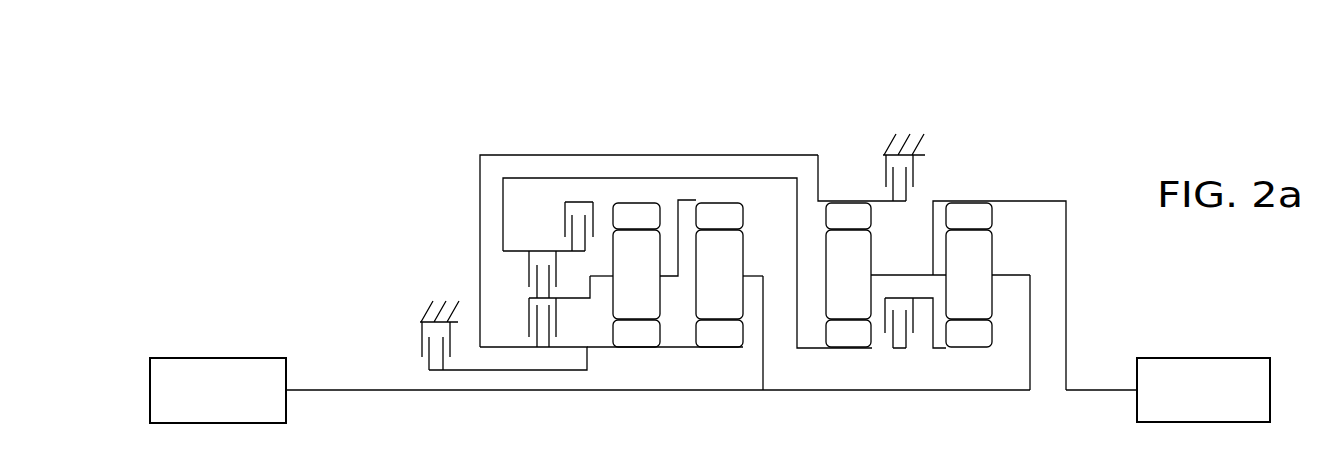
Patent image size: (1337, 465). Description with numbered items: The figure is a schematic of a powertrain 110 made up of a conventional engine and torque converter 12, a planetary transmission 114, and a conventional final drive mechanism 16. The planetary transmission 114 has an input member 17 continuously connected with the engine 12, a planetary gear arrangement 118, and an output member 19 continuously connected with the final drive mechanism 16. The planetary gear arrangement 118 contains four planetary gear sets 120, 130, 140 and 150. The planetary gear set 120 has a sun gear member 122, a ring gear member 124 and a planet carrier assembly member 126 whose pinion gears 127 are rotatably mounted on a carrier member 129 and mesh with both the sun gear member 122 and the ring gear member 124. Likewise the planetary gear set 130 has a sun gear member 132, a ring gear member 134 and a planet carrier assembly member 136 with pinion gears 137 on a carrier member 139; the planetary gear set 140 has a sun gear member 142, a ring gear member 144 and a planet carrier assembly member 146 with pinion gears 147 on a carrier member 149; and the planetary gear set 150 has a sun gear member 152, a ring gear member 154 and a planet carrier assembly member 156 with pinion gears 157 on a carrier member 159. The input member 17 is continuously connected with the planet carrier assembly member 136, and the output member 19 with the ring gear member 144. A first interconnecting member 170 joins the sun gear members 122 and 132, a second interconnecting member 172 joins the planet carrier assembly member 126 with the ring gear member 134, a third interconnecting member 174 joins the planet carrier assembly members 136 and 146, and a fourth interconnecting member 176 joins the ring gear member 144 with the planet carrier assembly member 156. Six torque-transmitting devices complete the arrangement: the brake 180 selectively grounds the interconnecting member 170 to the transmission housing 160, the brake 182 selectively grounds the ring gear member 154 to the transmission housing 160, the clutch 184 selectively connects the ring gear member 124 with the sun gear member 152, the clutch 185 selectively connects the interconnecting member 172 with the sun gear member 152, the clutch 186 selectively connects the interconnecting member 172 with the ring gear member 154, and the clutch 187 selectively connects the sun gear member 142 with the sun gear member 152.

The engine and torque converter 12 is at (207, 340).
The final drive mechanism 16 is at (1218, 345).
The input member 17 is at (320, 393).
The output member 19 is at (1095, 392).
The powertrain 110 is at (638, 88).
The planetary transmission 114 is at (727, 88).
The planetary gear arrangement 118 is at (818, 88).
The planetary gear set 120 is at (634, 327).
The sun gear member 122 is at (636, 333).
The ring gear member 124 is at (623, 225).
The planet carrier assembly member 126 is at (605, 285).
The pinion gears 127 is at (623, 283).
The carrier member 129 is at (602, 276).
The planetary gear set 130 is at (717, 327).
The sun gear member 132 is at (719, 333).
The ring gear member 134 is at (706, 225).
The planet carrier assembly member 136 is at (748, 262).
The pinion gears 137 is at (706, 283).
The carrier member 139 is at (750, 276).
The planetary gear set 140 is at (967, 327).
The sun gear member 142 is at (969, 333).
The ring gear member 144 is at (955, 225).
The planet carrier assembly member 146 is at (1004, 262).
The pinion gears 147 is at (955, 283).
The carrier member 149 is at (1010, 275).
The planetary gear set 150 is at (846, 327).
The sun gear member 152 is at (848, 333).
The ring gear member 154 is at (835, 225).
The planet carrier assembly member 156 is at (879, 262).
The pinion gears 157 is at (835, 283).
The carrier member 159 is at (885, 275).
The transmission housing 160 is at (432, 305).
The first interconnecting member 170 is at (683, 348).
The second interconnecting member 172 is at (672, 215).
The third interconnecting member 174 is at (793, 392).
The fourth interconnecting member 176 is at (940, 200).
The brake 180 is at (412, 343).
The brake 182 is at (875, 177).
The clutch 184 is at (552, 217).
The clutch 185 is at (520, 270).
The clutch 186 is at (520, 308).
The clutch 187 is at (918, 350).